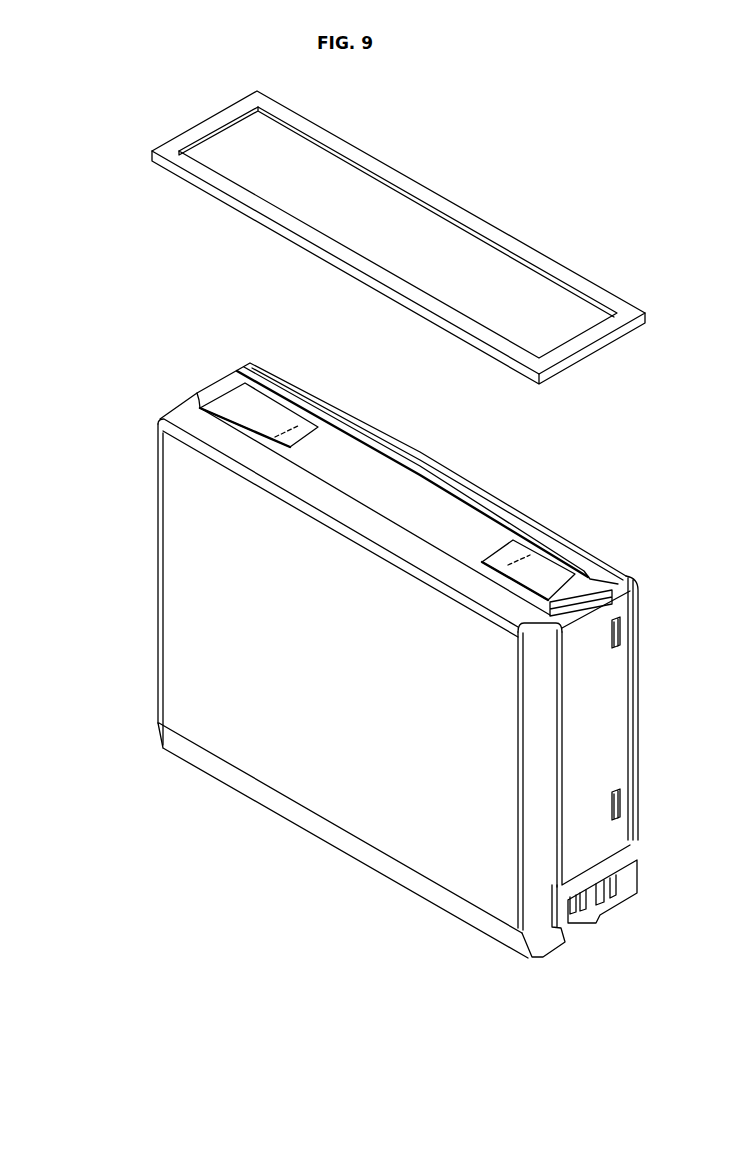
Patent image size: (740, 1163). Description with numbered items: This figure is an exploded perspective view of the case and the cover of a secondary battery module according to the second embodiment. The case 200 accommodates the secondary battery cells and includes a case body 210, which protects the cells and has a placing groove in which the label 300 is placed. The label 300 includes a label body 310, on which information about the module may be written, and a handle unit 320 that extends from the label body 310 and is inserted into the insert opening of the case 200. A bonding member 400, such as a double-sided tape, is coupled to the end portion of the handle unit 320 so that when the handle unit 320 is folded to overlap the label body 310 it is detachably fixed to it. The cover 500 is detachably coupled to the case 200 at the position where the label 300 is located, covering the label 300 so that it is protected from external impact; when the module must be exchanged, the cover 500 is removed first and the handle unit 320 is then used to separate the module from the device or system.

The case 200 is at (343, 657).
The case body 210 is at (180, 502).
The label 300 is at (393, 489).
The label body 310 is at (432, 513).
The handle unit 320 is at (543, 577).
The bonding member 400 is at (307, 420).
The cover 500 is at (513, 245).